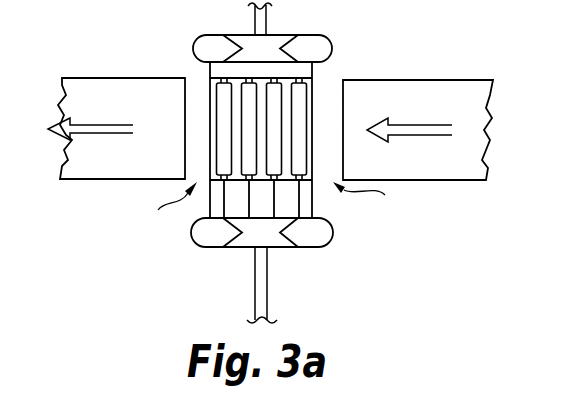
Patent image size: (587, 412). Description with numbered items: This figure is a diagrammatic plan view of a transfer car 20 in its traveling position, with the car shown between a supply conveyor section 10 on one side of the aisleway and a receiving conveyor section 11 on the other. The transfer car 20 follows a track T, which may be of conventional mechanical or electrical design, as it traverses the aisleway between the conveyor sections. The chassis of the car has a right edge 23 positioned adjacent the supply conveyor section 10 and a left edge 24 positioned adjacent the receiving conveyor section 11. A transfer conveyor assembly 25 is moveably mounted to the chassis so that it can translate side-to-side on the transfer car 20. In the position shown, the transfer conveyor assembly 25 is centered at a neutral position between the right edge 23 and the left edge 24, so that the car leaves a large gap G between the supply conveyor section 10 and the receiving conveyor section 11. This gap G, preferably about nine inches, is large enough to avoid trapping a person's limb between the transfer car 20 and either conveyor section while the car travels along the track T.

The supply conveyor section 10 is at (438, 72).
The receiving conveyor section 11 is at (101, 72).
The transfer car 20 is at (330, 207).
The right edge 23 is at (315, 108).
The left edge 24 is at (210, 82).
The transfer conveyor assembly 25 is at (300, 95).
The gap G is at (275, 214).
The track T is at (262, 287).